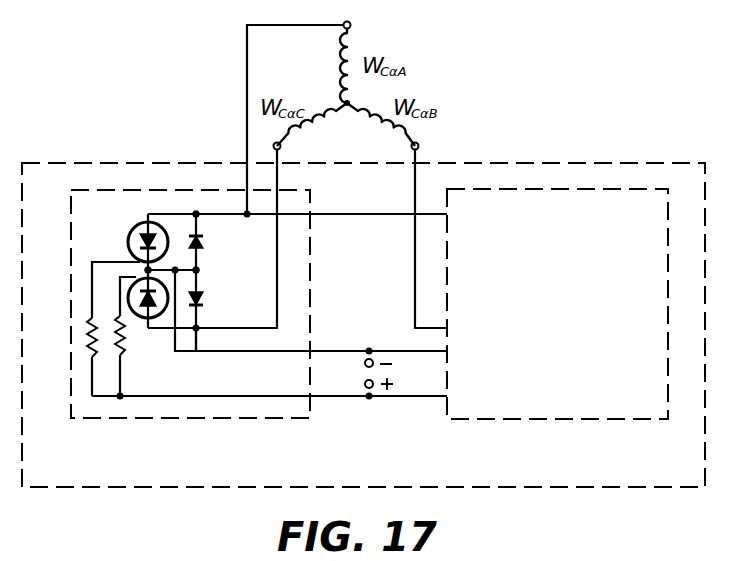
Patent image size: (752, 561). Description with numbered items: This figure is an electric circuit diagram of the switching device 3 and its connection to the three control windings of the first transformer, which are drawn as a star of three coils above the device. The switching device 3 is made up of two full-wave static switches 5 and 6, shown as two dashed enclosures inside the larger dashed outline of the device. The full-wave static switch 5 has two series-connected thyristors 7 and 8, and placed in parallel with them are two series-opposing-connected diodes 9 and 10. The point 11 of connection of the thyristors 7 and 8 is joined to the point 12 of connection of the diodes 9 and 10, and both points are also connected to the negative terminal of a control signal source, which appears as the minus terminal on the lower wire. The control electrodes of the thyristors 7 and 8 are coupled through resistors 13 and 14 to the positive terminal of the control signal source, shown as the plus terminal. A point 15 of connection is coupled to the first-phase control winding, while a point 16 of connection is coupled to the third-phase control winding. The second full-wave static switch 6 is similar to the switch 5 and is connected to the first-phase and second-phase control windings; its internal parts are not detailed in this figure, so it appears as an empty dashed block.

The switching device 3 is at (591, 163).
The full-wave static switch 5 is at (170, 419).
The full-wave static switch 6 is at (553, 419).
The thyristor 7 is at (128, 228).
The thyristor 8 is at (136, 326).
The diode 9 is at (205, 241).
The diode 10 is at (205, 297).
The point of connection of the thyristors 11 is at (152, 270).
The point of connection of the diodes 12 is at (205, 270).
The resistor 13 is at (88, 333).
The resistor 14 is at (120, 350).
The point of connection 15 is at (197, 212).
The point of connection 16 is at (197, 352).